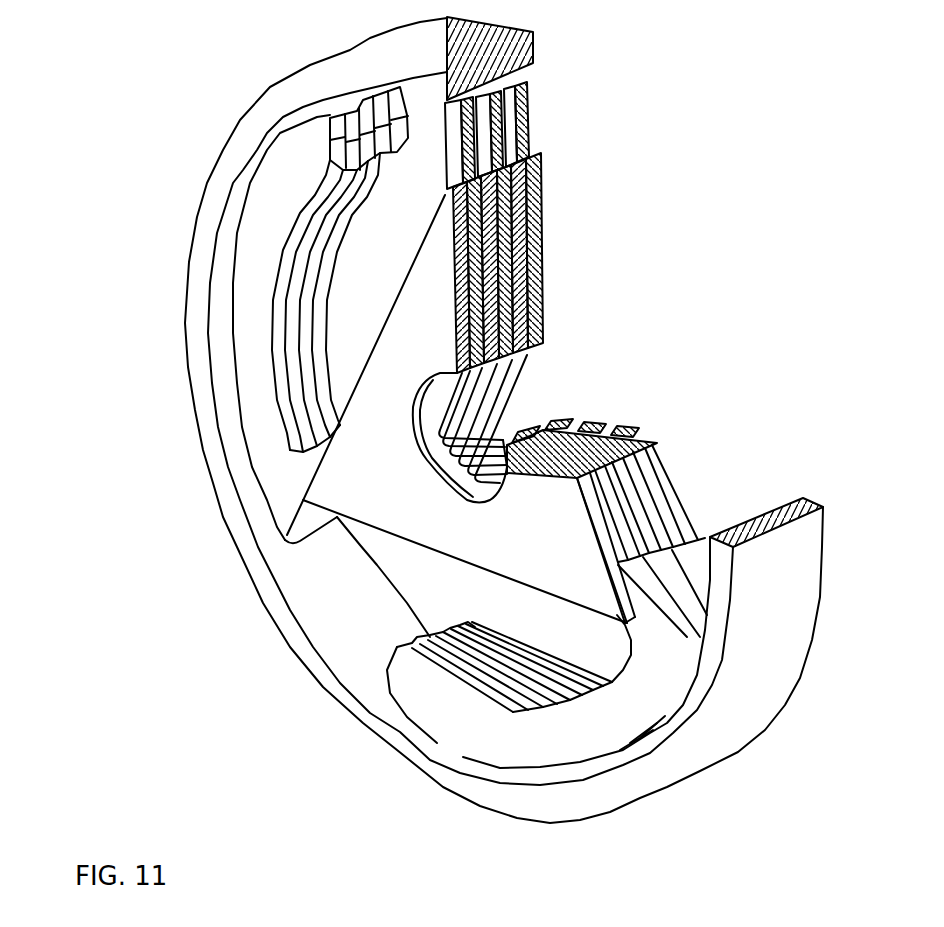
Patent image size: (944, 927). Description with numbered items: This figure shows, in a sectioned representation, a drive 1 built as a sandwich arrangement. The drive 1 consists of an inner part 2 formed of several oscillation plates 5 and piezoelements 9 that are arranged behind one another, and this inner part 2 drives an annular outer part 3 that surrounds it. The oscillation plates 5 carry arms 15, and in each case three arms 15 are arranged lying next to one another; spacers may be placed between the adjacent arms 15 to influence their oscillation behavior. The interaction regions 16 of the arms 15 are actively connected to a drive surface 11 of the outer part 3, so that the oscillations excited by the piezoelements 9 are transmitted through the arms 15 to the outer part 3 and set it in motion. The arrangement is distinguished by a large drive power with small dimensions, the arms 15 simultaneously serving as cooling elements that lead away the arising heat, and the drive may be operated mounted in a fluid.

The drive 1 is at (712, 103).
The inner part 2 is at (705, 300).
The outer part 3 is at (778, 617).
The oscillation plates 5 is at (493, 123).
The piezoelements 9 is at (436, 336).
The drive surface 11 is at (358, 611).
The arms 15 is at (254, 314).
The interaction regions 16 is at (266, 172).